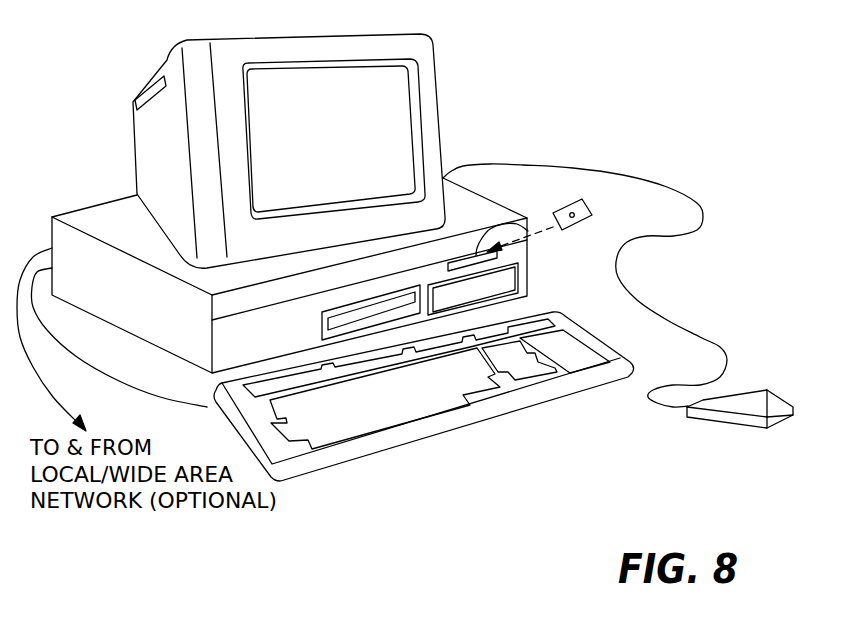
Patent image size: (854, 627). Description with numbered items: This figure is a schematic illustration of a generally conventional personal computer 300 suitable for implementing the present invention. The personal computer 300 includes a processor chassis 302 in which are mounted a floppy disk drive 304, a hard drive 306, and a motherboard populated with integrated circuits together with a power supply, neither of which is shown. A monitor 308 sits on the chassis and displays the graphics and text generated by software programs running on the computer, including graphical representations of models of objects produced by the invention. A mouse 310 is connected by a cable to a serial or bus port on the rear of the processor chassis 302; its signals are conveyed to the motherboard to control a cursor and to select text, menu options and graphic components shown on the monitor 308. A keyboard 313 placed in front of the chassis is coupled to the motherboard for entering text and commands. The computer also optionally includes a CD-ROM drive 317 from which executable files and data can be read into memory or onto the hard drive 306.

The personal computer 300 is at (434, 447).
The processor chassis 302 is at (530, 236).
The floppy disk drive 304 is at (528, 231).
The hard drive 306 is at (497, 284).
The monitor 308 is at (435, 98).
The mouse 310 is at (770, 427).
The keyboard 313 is at (520, 410).
The CD-ROM drive 317 is at (321, 332).